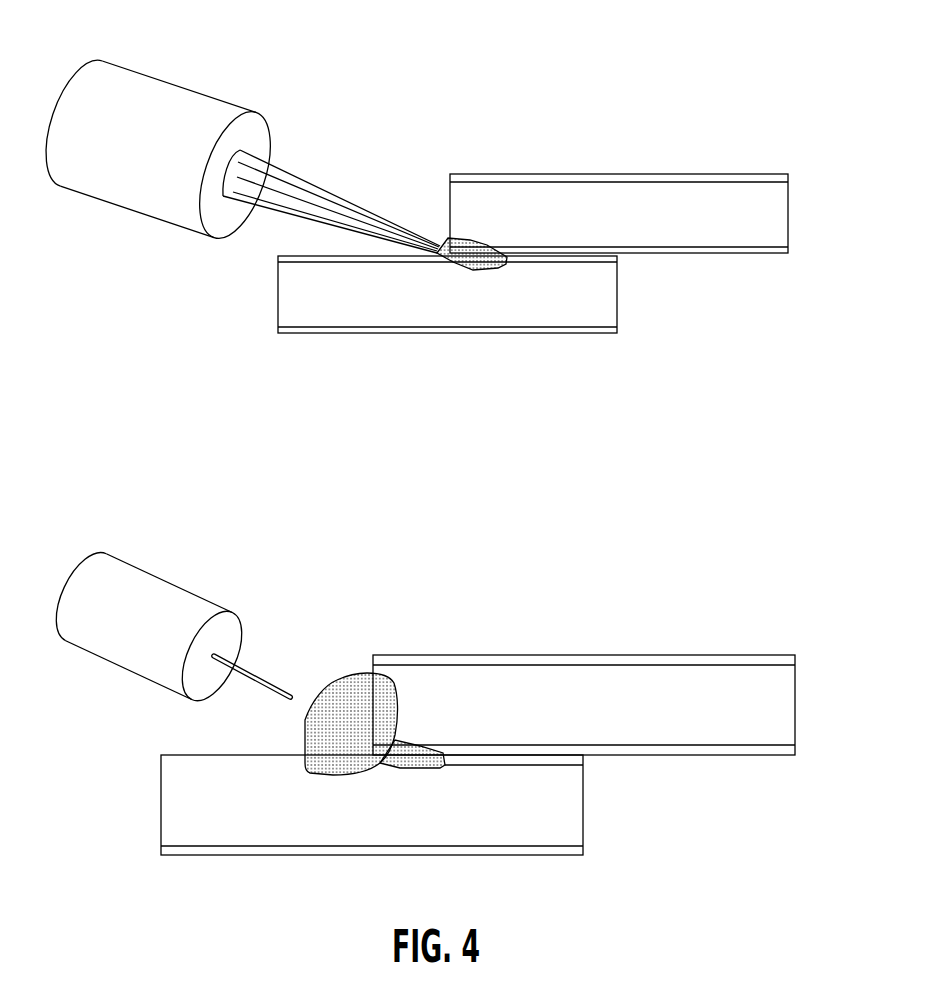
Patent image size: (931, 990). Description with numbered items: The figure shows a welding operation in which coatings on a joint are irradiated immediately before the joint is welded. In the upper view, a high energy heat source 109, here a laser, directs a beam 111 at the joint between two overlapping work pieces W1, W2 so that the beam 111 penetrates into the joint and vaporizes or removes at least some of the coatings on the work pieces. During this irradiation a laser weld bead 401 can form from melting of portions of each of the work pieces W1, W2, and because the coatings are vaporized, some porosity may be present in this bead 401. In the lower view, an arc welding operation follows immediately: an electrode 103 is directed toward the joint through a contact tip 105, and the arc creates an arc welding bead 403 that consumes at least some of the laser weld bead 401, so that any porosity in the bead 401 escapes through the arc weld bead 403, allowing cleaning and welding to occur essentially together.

The high energy heat source 109 is at (178, 86).
The beam 111 is at (300, 190).
The laser weld bead 401 is at (468, 248).
The work piece W1 is at (737, 229).
The work piece W2 is at (595, 303).
The contact tip 105 is at (160, 573).
The electrode 103 is at (260, 673).
The arc welding bead 403 is at (362, 697).